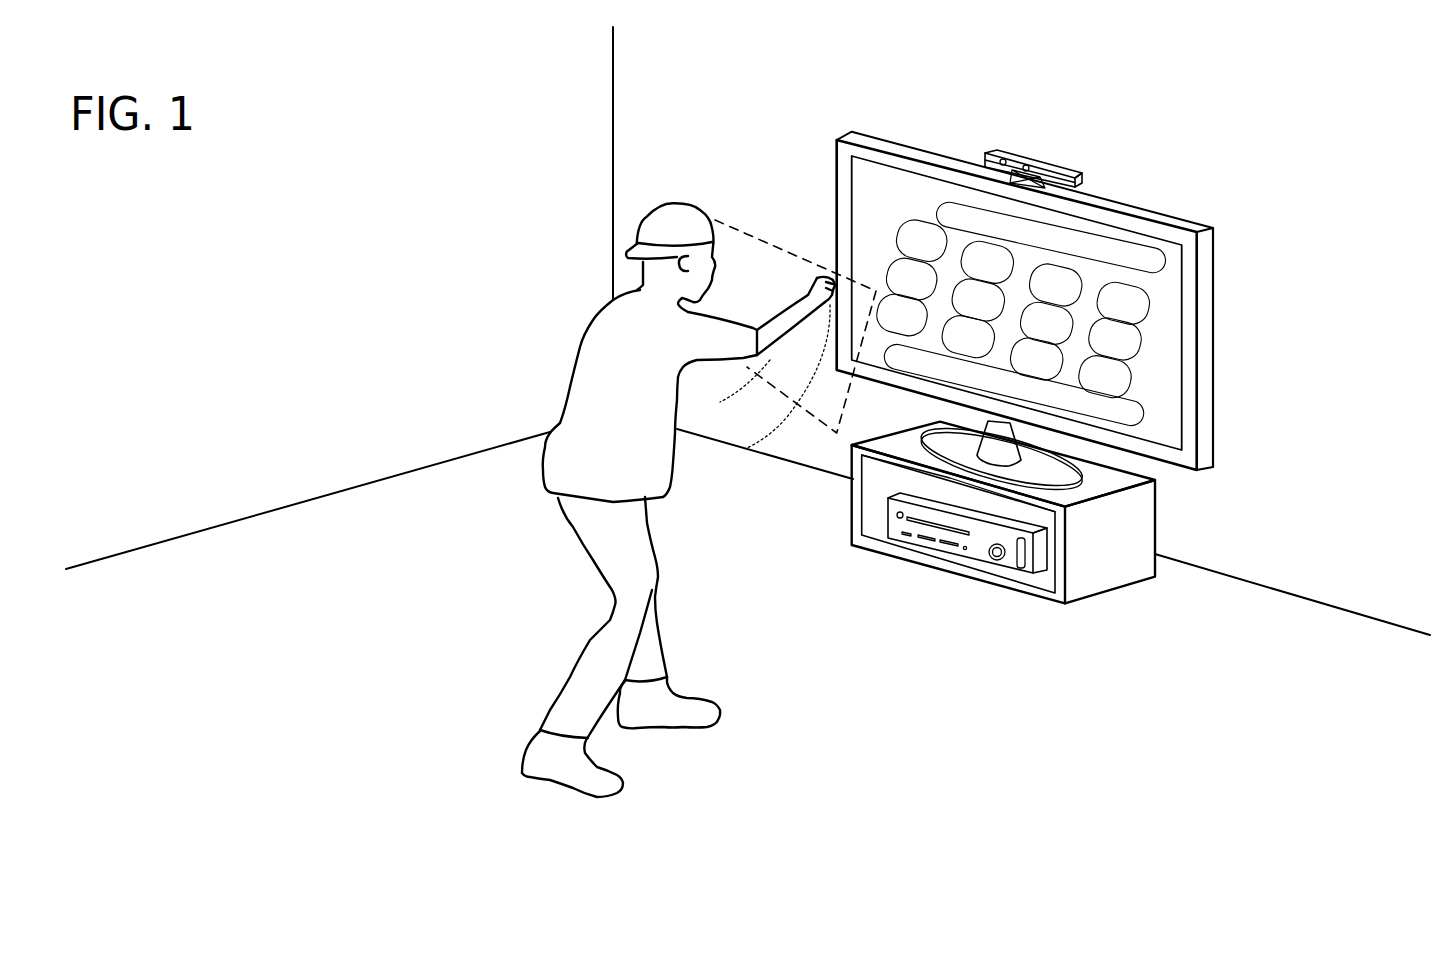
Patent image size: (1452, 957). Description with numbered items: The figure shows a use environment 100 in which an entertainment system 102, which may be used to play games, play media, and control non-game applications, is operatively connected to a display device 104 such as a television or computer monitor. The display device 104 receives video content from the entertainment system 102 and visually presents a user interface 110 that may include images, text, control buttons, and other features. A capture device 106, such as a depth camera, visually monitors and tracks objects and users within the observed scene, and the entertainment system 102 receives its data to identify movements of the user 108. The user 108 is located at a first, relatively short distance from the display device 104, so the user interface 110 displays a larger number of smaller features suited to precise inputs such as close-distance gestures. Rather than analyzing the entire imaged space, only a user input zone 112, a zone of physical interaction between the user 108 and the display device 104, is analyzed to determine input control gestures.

The use environment 100 is at (1066, 92).
The entertainment system 102 is at (977, 557).
The display device 104 is at (1214, 357).
The capture device 106 is at (1058, 167).
The user 108 is at (658, 612).
The user interface 110 is at (917, 210).
The user input zone 112 is at (757, 237).